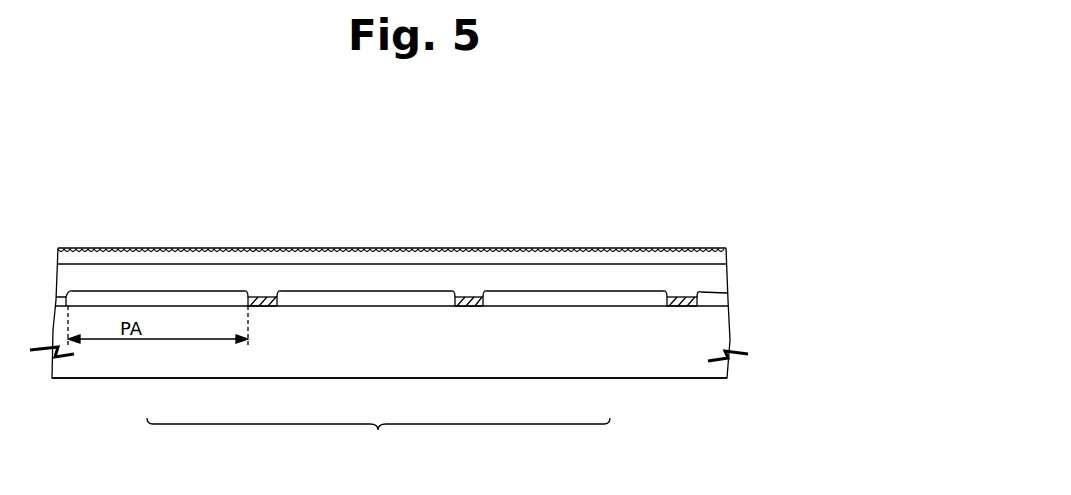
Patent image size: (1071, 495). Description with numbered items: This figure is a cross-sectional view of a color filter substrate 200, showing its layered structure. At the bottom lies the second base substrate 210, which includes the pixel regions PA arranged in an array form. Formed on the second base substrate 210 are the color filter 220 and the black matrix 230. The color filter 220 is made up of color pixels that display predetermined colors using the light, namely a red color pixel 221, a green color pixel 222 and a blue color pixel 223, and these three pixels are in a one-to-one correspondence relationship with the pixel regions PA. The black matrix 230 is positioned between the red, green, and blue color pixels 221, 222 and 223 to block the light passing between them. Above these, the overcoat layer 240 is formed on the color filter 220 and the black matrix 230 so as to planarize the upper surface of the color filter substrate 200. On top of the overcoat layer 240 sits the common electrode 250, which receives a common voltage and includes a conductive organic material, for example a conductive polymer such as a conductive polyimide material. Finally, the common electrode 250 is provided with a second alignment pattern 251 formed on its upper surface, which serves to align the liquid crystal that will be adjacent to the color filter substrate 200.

The color filter substrate 200 is at (752, 152).
The second base substrate 210 is at (717, 330).
The color filter 220 is at (378, 439).
The red color pixel 221 is at (170, 302).
The green color pixel 222 is at (380, 302).
The blue color pixel 223 is at (592, 302).
The black matrix 230 is at (468, 297).
The overcoat layer 240 is at (717, 283).
The common electrode 250 is at (717, 258).
The second alignment pattern 251 is at (713, 251).